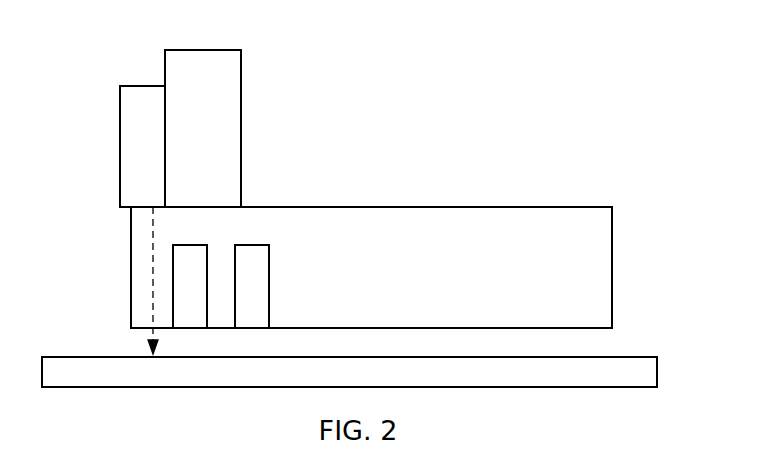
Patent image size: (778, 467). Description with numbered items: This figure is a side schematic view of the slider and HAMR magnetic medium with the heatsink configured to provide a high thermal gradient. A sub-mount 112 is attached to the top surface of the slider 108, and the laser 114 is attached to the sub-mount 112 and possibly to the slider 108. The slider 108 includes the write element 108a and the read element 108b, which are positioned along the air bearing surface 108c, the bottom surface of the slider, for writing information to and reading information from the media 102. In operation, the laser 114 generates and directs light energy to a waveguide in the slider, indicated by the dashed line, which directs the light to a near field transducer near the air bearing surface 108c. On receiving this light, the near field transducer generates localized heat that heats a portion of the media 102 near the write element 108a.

The media 102 is at (658, 371).
The slider 108 is at (546, 207).
The write element 108a is at (178, 245).
The read element 108b is at (259, 245).
The air bearing surface 108c is at (600, 329).
The sub-mount 112 is at (216, 50).
The laser 114 is at (131, 86).